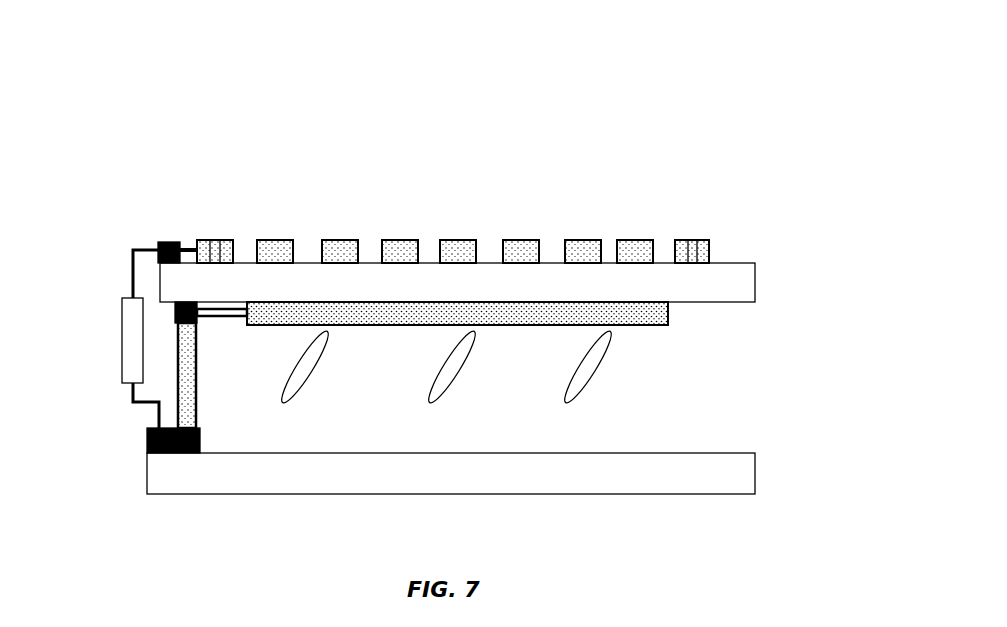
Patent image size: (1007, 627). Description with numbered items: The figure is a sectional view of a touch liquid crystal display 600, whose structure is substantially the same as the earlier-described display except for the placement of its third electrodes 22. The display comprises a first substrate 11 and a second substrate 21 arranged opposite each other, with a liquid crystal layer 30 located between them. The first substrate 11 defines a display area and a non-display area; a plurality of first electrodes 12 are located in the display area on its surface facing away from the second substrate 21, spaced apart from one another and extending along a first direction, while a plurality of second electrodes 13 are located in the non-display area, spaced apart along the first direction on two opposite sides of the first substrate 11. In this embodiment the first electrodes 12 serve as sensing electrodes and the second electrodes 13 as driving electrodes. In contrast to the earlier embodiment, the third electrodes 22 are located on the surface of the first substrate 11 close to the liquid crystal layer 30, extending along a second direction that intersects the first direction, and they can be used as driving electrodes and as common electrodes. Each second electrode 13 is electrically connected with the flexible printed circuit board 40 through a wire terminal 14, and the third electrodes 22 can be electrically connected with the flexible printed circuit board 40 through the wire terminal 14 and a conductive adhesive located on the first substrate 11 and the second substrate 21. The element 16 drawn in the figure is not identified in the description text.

The touch liquid crystal display 600 is at (405, 62).
The first substrate 11 is at (757, 282).
The first electrodes 12 is at (515, 247).
The second electrodes 13 is at (217, 240).
The wire terminal 14 is at (157, 238).
The conductive pillar 16 is at (175, 373).
The second substrate 21 is at (153, 478).
The third electrodes 22 is at (673, 313).
The liquid crystal layer 30 is at (590, 370).
The flexible printed circuit board 40 is at (128, 330).